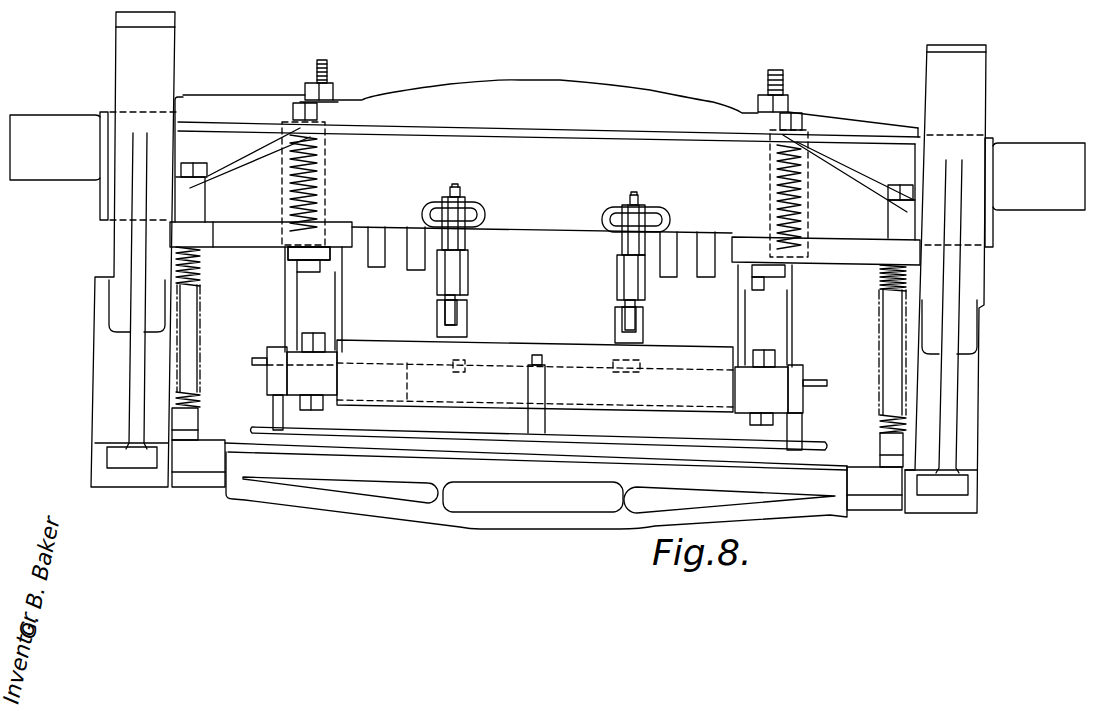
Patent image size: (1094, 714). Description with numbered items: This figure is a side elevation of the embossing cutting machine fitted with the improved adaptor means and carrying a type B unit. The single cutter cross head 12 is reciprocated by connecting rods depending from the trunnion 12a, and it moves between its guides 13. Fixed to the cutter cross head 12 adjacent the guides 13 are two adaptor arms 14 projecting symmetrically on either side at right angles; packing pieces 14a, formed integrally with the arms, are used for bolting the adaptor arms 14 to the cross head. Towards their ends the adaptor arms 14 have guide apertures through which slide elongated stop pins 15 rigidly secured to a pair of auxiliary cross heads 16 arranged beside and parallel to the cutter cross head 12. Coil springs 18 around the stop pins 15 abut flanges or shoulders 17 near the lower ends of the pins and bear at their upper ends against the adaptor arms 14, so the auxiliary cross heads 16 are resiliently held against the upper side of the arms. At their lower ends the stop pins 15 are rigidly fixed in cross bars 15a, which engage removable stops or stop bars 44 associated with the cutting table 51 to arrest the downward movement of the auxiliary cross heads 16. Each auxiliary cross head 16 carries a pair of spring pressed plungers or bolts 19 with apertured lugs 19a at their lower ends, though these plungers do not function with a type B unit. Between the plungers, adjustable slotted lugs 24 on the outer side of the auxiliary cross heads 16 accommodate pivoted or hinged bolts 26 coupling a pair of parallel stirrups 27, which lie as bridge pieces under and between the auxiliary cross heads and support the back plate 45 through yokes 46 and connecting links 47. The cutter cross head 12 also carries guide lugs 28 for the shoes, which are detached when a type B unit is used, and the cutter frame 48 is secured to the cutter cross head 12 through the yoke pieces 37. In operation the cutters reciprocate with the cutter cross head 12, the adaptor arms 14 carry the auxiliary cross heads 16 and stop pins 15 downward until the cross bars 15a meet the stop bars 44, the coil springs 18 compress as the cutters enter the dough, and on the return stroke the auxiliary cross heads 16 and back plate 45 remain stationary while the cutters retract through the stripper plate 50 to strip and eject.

The cutter cross head 12 is at (517, 90).
The trunnion 12a is at (547, 179).
The guides 13 is at (125, 250).
The adaptor arms 14 is at (204, 240).
The packing pieces 14a is at (255, 237).
The stop pins 15 is at (895, 363).
The cross bars 15a is at (183, 422).
The auxiliary cross heads 16 is at (547, 168).
The flanges or shoulders 17 is at (198, 403).
The coil springs 18 is at (200, 285).
The spring pressed plungers or bolts 19 is at (328, 77).
The apertured lugs 19a is at (297, 262).
The slotted lugs 24 is at (472, 210).
The pivoted or hinged bolts 26 is at (455, 190).
The stirrups 27 is at (467, 273).
The guide lugs 28 is at (416, 262).
The yoke pieces 37 is at (290, 302).
The stops or stop bars 44 is at (190, 445).
The back plate 45 is at (407, 404).
The yokes 46 is at (463, 335).
The connecting links 47 is at (458, 311).
The cutter frame 48 is at (505, 385).
The stripper plate 50 is at (443, 436).
The cutting table 51 is at (298, 457).